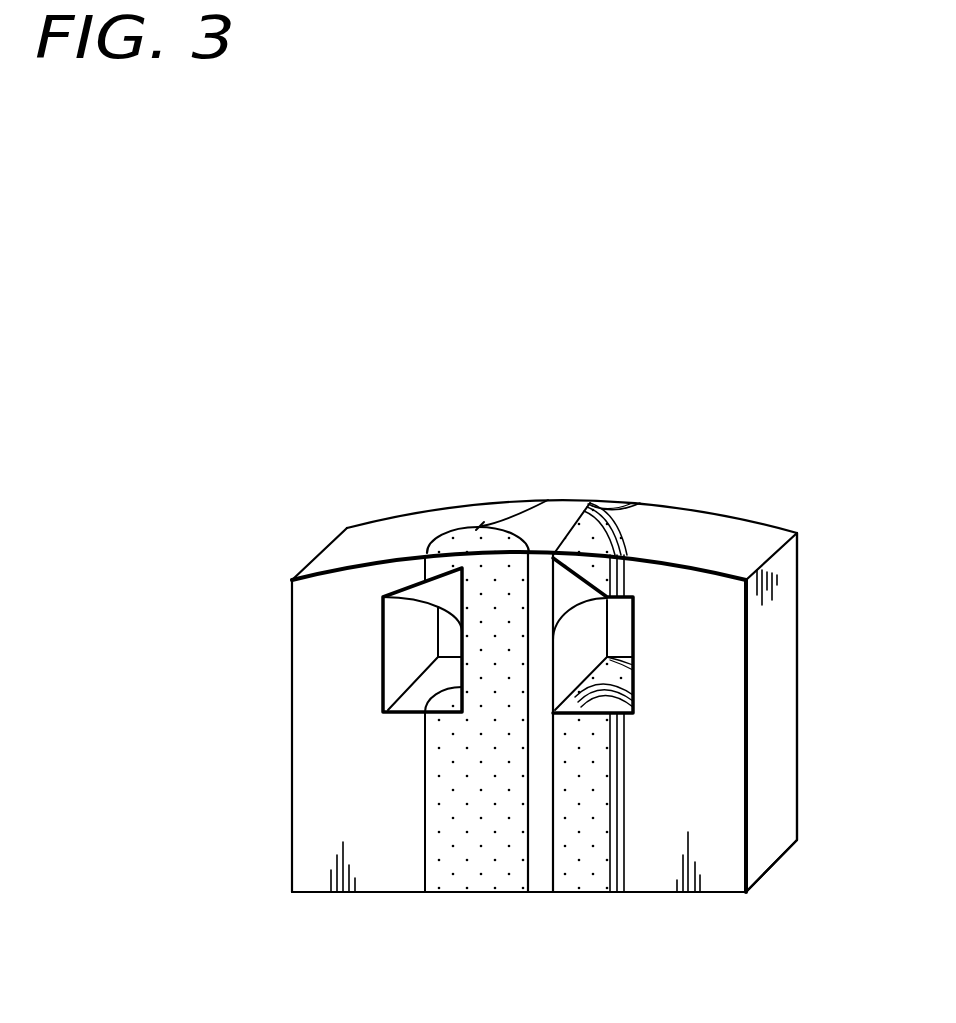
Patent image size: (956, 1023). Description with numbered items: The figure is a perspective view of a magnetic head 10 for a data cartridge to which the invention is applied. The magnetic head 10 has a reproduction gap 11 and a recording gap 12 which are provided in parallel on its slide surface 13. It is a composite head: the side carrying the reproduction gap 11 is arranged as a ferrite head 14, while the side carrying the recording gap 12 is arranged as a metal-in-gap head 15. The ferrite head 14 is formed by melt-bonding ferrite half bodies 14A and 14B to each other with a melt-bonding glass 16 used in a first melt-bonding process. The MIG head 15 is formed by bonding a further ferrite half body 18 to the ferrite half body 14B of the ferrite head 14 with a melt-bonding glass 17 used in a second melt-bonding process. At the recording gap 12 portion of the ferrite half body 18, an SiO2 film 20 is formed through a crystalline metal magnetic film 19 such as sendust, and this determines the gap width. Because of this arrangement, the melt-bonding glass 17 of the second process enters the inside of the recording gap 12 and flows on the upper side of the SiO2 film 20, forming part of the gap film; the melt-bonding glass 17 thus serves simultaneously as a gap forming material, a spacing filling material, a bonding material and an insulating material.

The magnetic head 10 is at (806, 628).
The reproduction gap 11 is at (480, 527).
The recording gap 12 is at (577, 506).
The slide surface 13 is at (387, 538).
The ferrite head 14 is at (303, 708).
The ferrite half body 14A is at (313, 797).
The ferrite half body 14B is at (530, 782).
The metal-in-gap (MIG) head 15 is at (700, 818).
The melt-bonding glass 16 is at (485, 870).
The melt-bonding glass 17 is at (583, 870).
The ferrite half body 18 is at (770, 722).
The crystalline metal magnetic film 19 is at (650, 512).
The SiO2 film 20 is at (625, 505).